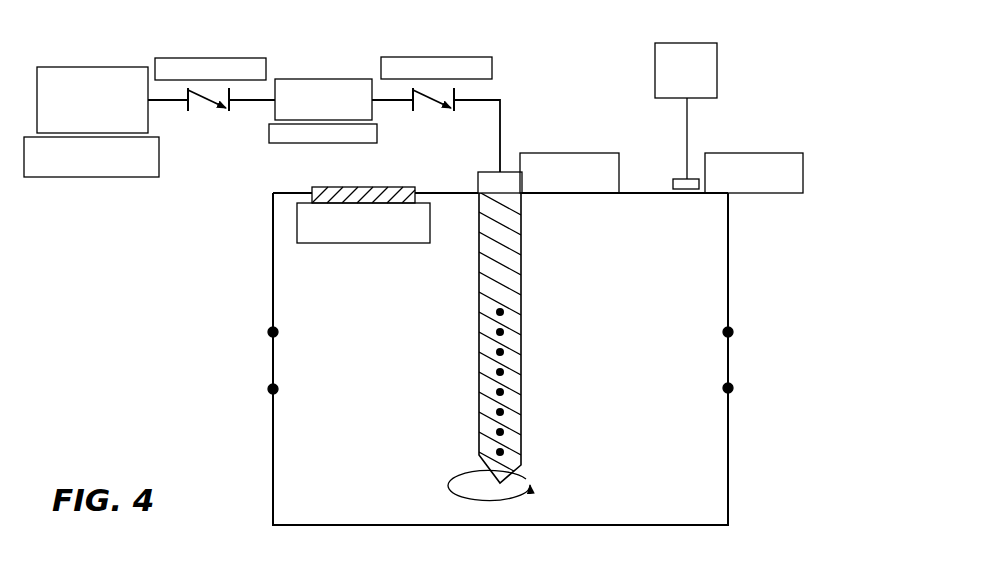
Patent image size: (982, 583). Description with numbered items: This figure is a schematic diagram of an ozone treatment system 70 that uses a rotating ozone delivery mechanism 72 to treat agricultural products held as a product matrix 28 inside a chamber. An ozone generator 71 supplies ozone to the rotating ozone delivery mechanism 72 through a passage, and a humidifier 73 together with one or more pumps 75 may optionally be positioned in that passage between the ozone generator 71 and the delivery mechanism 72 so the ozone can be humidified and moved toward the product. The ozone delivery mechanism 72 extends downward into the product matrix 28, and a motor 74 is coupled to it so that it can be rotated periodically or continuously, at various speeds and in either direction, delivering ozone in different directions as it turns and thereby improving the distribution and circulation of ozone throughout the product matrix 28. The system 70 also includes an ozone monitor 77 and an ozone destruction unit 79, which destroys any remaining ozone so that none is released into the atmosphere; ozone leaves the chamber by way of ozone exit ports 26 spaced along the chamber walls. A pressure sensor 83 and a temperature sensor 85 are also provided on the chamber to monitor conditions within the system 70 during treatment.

The ozone treatment system 70 is at (846, 55).
The ozone generator 71 is at (60, 67).
The humidifier 73 is at (327, 79).
The pump 75 is at (455, 112).
The motor 74 is at (560, 153).
The ozone monitor 77 is at (717, 65).
The ozone destruction unit 79 is at (757, 153).
The temperature sensor 85 is at (312, 188).
The pressure sensor 83 is at (297, 222).
The ozone exit port 26 is at (273, 389).
The product matrix 28 is at (390, 367).
The rotating ozone delivery mechanism 72 is at (521, 320).